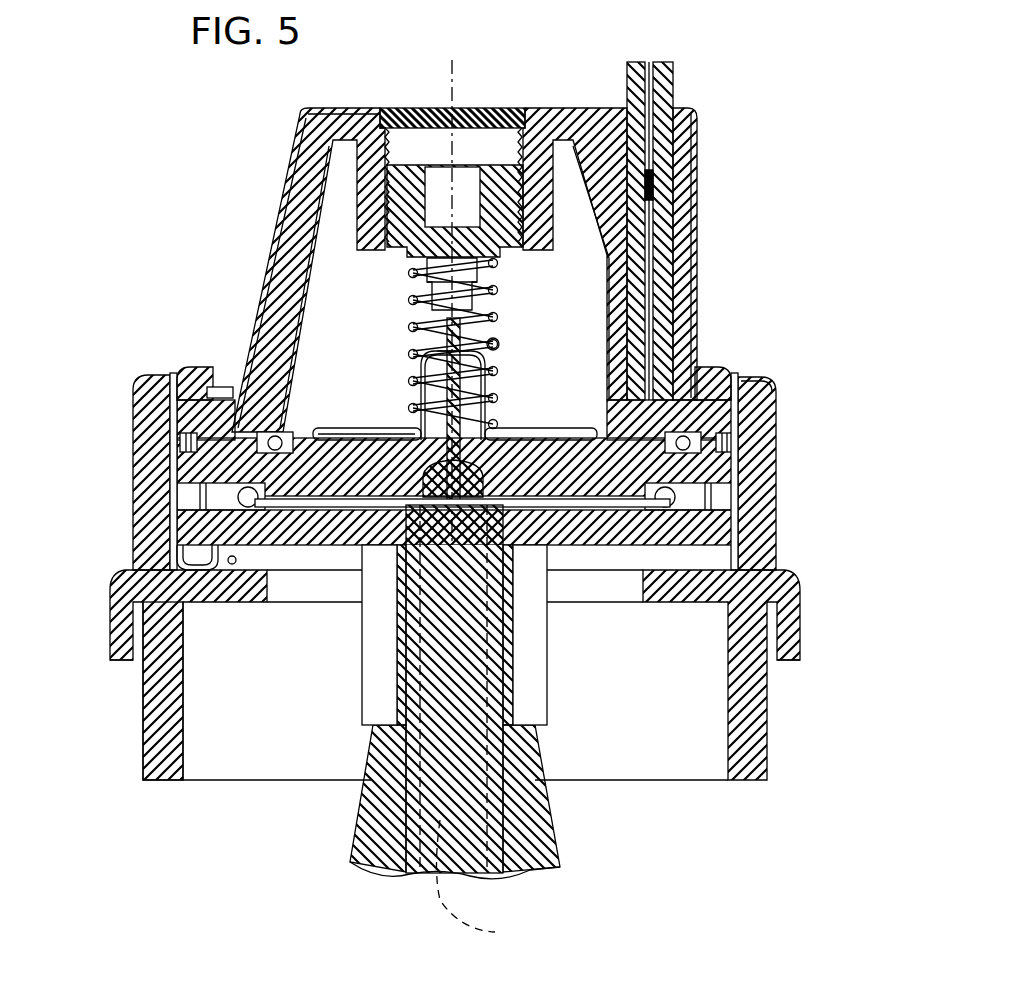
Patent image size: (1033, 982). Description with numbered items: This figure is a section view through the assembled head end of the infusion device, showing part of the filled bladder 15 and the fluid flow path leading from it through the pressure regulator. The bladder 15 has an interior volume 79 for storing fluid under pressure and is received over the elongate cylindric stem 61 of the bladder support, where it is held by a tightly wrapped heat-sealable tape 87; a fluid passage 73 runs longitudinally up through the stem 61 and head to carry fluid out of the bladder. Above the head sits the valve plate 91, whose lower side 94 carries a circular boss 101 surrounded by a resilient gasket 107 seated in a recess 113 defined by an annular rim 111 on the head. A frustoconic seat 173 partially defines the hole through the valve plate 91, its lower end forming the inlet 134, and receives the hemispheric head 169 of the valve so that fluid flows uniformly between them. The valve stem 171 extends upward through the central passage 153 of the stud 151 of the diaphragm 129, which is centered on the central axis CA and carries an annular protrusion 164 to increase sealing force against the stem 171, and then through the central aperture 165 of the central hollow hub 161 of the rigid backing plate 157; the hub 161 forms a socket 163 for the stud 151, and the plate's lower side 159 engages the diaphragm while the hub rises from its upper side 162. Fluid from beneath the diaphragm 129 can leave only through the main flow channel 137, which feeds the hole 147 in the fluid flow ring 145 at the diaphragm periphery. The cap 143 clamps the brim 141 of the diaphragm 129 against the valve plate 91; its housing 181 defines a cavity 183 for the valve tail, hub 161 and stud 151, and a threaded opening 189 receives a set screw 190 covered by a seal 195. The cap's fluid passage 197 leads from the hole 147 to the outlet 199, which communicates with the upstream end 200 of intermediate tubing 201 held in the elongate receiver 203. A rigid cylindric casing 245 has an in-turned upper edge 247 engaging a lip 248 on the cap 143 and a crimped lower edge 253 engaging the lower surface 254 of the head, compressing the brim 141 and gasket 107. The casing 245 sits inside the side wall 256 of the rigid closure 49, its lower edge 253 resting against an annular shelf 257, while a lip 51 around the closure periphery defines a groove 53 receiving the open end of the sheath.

The bladder 15 is at (558, 860).
The rigid closure 49 is at (133, 479).
The lip 51 is at (112, 637).
The groove 53 is at (140, 652).
The stem 61 is at (538, 808).
The fluid passage 73 is at (483, 882).
The interior volume 79 is at (524, 877).
The tape 87 is at (548, 708).
The valve plate 91 is at (197, 463).
The lower side 94 is at (726, 519).
The circular boss 101 is at (380, 550).
The resilient gasket 107 is at (197, 488).
The annular rim 111 is at (710, 483).
The recess 113 is at (252, 512).
The diaphragm 129 is at (290, 433).
The inlet 134 is at (507, 500).
The main flow channel 137 is at (618, 414).
The brim 141 is at (290, 436).
The cap 143 is at (292, 160).
The fluid flow ring 145 is at (768, 431).
The hole 147 is at (774, 393).
The stud 151 is at (487, 392).
The central passage 153 is at (486, 362).
The backing plate 157 is at (420, 432).
The lower side 159 is at (370, 434).
The central hollow hub 161 is at (413, 380).
The upper side 162 is at (352, 430).
The socket 163 is at (496, 412).
The annular protrusion 164 is at (498, 340).
The central aperture 165 is at (496, 265).
The hemispheric head 169 is at (483, 472).
The valve stem 171 is at (440, 372).
The frustoconic seat 173 is at (400, 682).
The housing 181 is at (265, 245).
The cavity 183 is at (351, 281).
The threaded opening 189 is at (396, 133).
The set screw 190 is at (412, 163).
The seal 195 is at (500, 108).
The fluid passage 197 is at (738, 378).
The outlet 199 is at (708, 372).
The upstream end 200 is at (670, 322).
The intermediate tubing 201 is at (676, 92).
The elongate receiver 203 is at (668, 300).
The casing 245 is at (200, 548).
The in-turned upper edge 247 is at (184, 378).
The lip 248 is at (170, 375).
The lower edge 253 is at (726, 570).
The lower surface 254 is at (112, 596).
The side wall 256 is at (781, 551).
The annular shelf 257 is at (232, 565).
The central axis CA is at (453, 78).